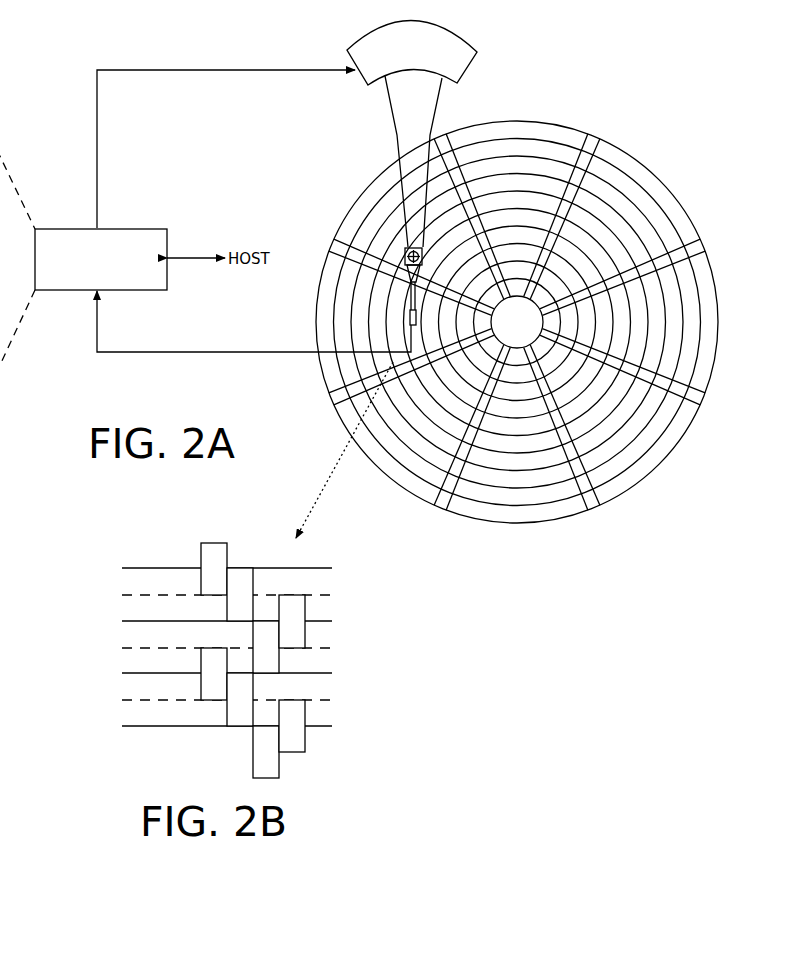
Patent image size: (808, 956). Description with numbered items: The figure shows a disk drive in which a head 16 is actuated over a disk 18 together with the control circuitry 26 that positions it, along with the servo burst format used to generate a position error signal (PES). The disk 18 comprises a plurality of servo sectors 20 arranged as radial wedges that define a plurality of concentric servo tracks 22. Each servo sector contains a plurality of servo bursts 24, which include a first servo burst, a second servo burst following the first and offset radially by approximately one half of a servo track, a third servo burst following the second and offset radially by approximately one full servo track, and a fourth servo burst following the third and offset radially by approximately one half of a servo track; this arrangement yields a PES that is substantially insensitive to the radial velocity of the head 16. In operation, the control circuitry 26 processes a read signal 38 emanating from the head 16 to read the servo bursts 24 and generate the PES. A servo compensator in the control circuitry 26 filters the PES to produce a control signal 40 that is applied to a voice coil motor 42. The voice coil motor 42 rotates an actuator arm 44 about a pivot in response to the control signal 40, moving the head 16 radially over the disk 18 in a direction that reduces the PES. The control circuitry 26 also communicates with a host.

In FIG. 2A, the head 16 is at (409, 322).
In FIG. 2A, the disk 18 is at (655, 167).
In FIG. 2A, the servo sectors 20 is at (449, 136).
In FIG. 2A, the servo tracks 22 is at (518, 148).
In FIG. 2B, the servo bursts 24 is at (216, 543).
In FIG. 2A, the control circuitry 26 is at (137, 229).
In FIG. 2A, the read signal 38 is at (222, 352).
In FIG. 2A, the control signal 40 is at (97, 136).
In FIG. 2A, the voice coil motor 42 is at (360, 78).
In FIG. 2A, the actuator arm 44 is at (396, 150).